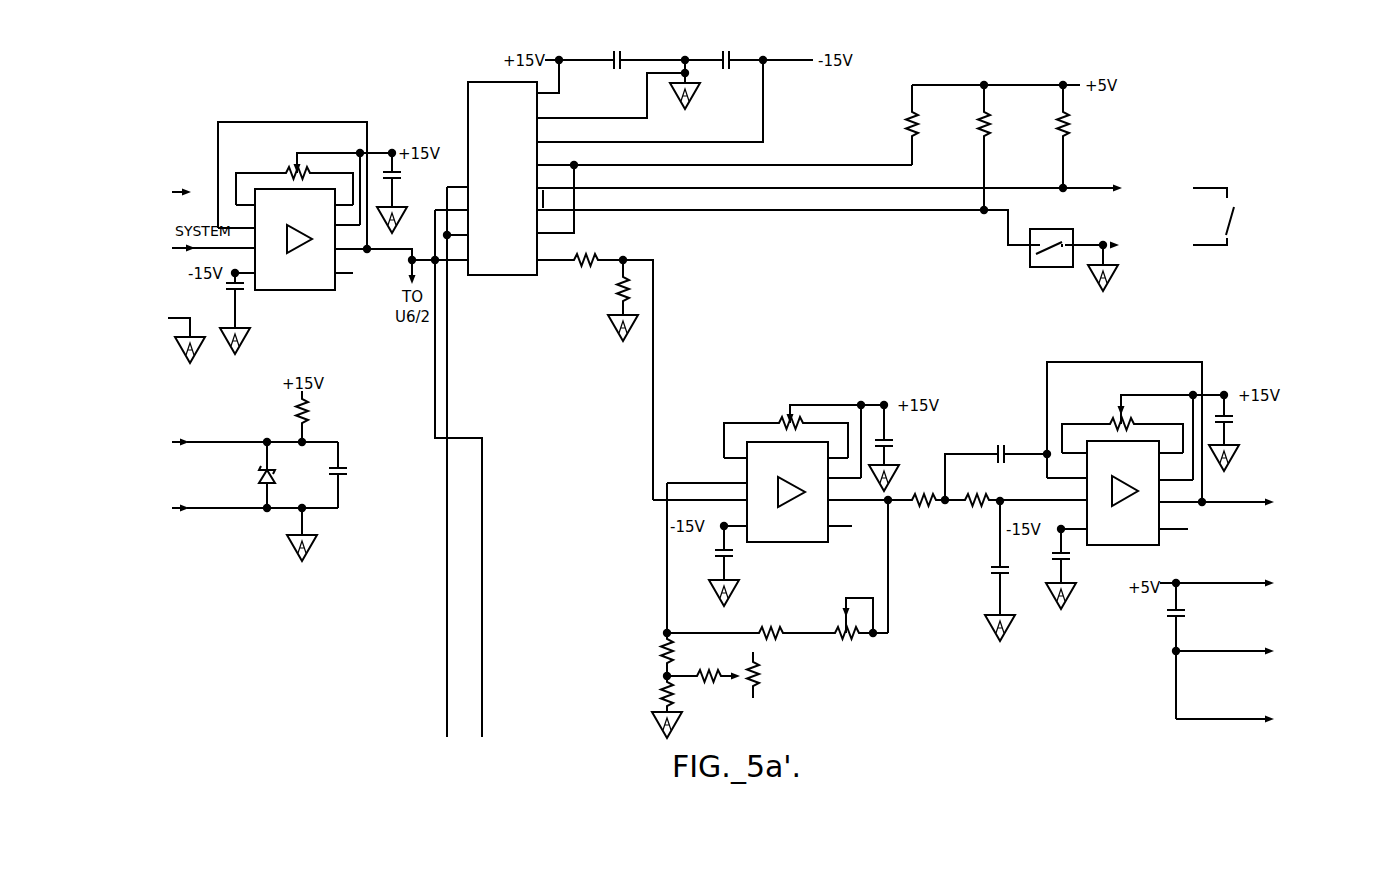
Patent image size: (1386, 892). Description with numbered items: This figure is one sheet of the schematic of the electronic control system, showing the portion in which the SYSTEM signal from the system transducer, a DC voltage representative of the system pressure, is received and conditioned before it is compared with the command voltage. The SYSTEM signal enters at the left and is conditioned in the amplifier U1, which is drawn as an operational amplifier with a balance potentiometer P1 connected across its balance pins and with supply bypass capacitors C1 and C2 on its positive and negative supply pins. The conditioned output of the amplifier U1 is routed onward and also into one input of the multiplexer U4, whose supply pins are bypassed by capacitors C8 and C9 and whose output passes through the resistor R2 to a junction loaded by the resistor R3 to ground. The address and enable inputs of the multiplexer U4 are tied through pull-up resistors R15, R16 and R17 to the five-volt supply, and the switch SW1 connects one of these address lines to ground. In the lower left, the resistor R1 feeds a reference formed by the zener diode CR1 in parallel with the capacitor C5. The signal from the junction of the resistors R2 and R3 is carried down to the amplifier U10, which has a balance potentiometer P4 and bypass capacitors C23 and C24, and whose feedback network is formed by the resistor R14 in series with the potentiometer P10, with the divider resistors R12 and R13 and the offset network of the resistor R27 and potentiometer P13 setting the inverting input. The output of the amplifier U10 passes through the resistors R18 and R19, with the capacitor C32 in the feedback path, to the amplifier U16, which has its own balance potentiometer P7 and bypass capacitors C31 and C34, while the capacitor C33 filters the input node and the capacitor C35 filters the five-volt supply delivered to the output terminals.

The amplifier U1 is at (269, 252).
The balance potentiometer P1 is at (314, 179).
The supply bypass capacitor C1 is at (398, 193).
The supply bypass capacitor C2 is at (243, 313).
The analog multiplexer U4 is at (774, 278).
The multiplexer supply capacitor C8 is at (617, 50).
The multiplexer supply capacitor C9 is at (726, 50).
The output resistor R2 is at (587, 250).
The load resistor R3 is at (629, 300).
The pull-up resistor R15 is at (928, 125).
The pull-up resistor R16 is at (1000, 147).
The pull-up resistor R17 is at (1079, 136).
The switch SW1 is at (1052, 259).
The reference resistor R1 is at (312, 416).
The zener diode CR1 is at (250, 475).
The reference filter capacitor C5 is at (348, 475).
The amplifier U10 is at (781, 505).
The balance potentiometer P4 is at (804, 429).
The supply bypass capacitor C23 is at (896, 448).
The supply bypass capacitor C24 is at (736, 566).
The feedback resistor R14 is at (769, 622).
The gain potentiometer P10 is at (850, 631).
The feedback divider resistor R12 is at (653, 654).
The feedback divider resistor R13 is at (658, 707).
The offset resistor R27 is at (703, 688).
The offset potentiometer P13 is at (773, 681).
The output resistor R18 is at (921, 490).
The input resistor R19 is at (977, 490).
The feedback capacitor C32 is at (1014, 444).
The output amplifier U16 is at (1158, 510).
The balance potentiometer P7 is at (1143, 424).
The supply bypass capacitor C31 is at (1236, 433).
The filter capacitor C33 is at (1012, 571).
The supply bypass capacitor C34 is at (1073, 569).
The supply filter capacitor C35 is at (1194, 651).